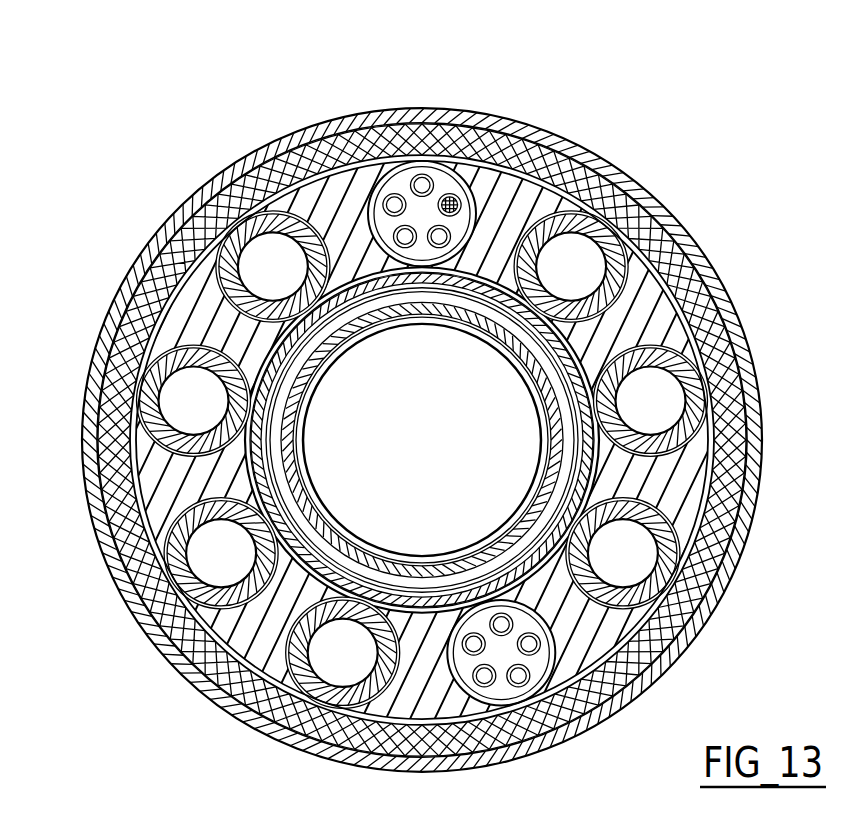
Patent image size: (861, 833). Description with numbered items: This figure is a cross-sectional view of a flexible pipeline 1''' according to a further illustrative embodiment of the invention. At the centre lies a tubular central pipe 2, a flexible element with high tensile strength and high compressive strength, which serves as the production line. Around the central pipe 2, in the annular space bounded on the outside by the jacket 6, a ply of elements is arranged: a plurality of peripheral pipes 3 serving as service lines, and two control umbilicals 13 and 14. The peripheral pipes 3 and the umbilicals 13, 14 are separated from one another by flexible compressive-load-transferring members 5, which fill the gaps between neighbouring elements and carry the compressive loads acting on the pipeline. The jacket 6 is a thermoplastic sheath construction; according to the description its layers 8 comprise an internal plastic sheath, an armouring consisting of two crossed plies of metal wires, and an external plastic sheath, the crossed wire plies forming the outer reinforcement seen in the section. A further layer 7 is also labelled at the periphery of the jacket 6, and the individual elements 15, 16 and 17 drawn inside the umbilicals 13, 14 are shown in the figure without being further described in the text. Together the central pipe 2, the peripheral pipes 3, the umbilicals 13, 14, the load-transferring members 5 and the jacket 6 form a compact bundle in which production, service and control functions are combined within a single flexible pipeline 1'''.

The flexible pipeline 1''' is at (422, 439).
The central pipe 2 is at (422, 439).
The peripheral pipe 3 is at (422, 459).
The compressive-load-transferring member 5 is at (422, 439).
The jacket 6 is at (425, 439).
The outer sheath 7 is at (422, 439).
The jacket layers 8 is at (113, 267).
The control umbilical 13 is at (422, 213).
The control umbilical 14 is at (422, 440).
The conductor 15 is at (422, 185).
The shielded conductor 16 is at (449, 205).
The cable bundle 17 is at (501, 652).